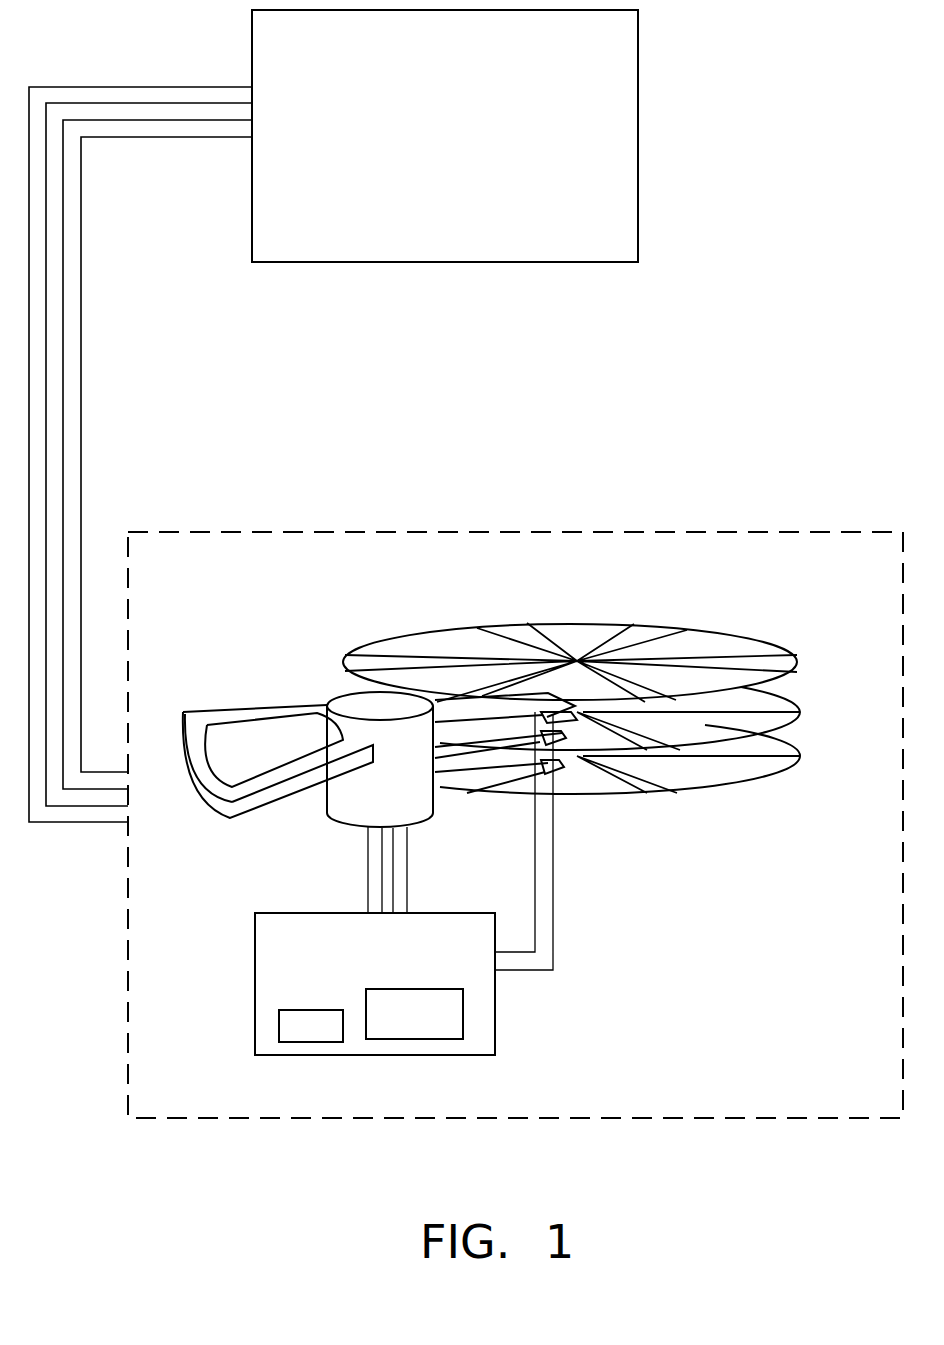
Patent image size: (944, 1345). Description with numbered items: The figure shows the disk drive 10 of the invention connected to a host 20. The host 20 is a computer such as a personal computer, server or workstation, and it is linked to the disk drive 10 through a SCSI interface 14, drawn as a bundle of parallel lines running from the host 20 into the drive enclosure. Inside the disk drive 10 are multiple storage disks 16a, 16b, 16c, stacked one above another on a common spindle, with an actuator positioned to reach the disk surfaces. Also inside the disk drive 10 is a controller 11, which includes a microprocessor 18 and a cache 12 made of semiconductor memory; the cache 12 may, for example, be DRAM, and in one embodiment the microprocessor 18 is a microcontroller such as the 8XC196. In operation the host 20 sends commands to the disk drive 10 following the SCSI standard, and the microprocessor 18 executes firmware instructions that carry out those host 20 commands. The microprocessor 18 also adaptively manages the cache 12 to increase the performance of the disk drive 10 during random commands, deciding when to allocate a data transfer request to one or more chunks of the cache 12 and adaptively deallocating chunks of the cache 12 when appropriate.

The disk drive 10 is at (426, 532).
The controller 11 is at (255, 954).
The cache 12 is at (463, 1012).
The SCSI interface 14 is at (84, 349).
The storage disk 16a is at (797, 664).
The storage disk 16b is at (803, 712).
The storage disk 16c is at (797, 752).
The microprocessor 18 is at (279, 1027).
The host 20 is at (535, 68).